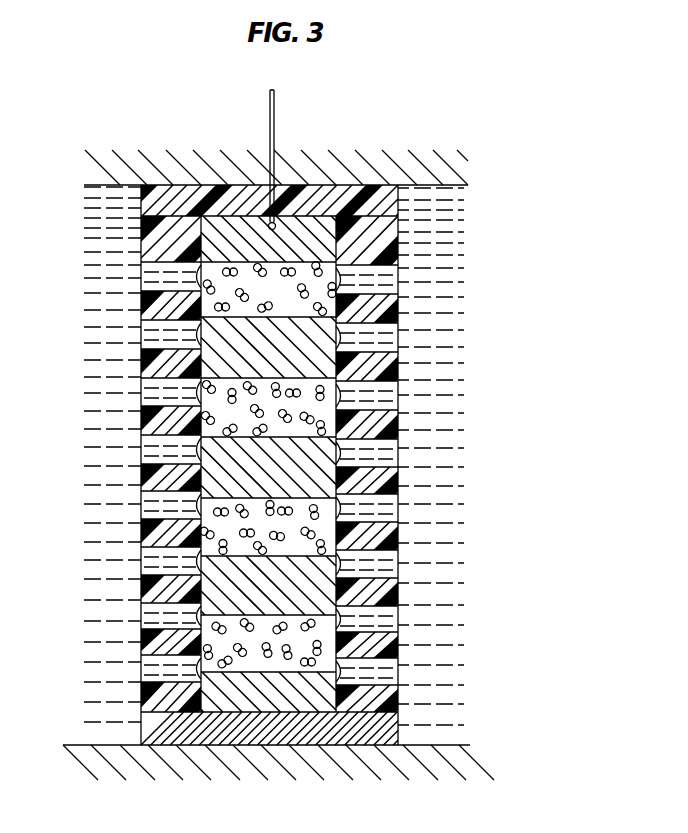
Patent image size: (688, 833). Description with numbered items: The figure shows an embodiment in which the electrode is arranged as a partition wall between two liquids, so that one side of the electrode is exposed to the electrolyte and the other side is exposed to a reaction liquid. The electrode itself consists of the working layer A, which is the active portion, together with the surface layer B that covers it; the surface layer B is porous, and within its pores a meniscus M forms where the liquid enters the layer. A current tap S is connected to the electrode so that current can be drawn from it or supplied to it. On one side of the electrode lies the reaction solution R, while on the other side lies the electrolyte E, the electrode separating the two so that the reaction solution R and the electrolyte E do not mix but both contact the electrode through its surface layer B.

The current tap S is at (275, 113).
The working layer A is at (292, 226).
The surface layer B is at (366, 197).
The electrolyte E is at (97, 393).
The reaction solution R is at (427, 422).
The meniscus M is at (206, 320).